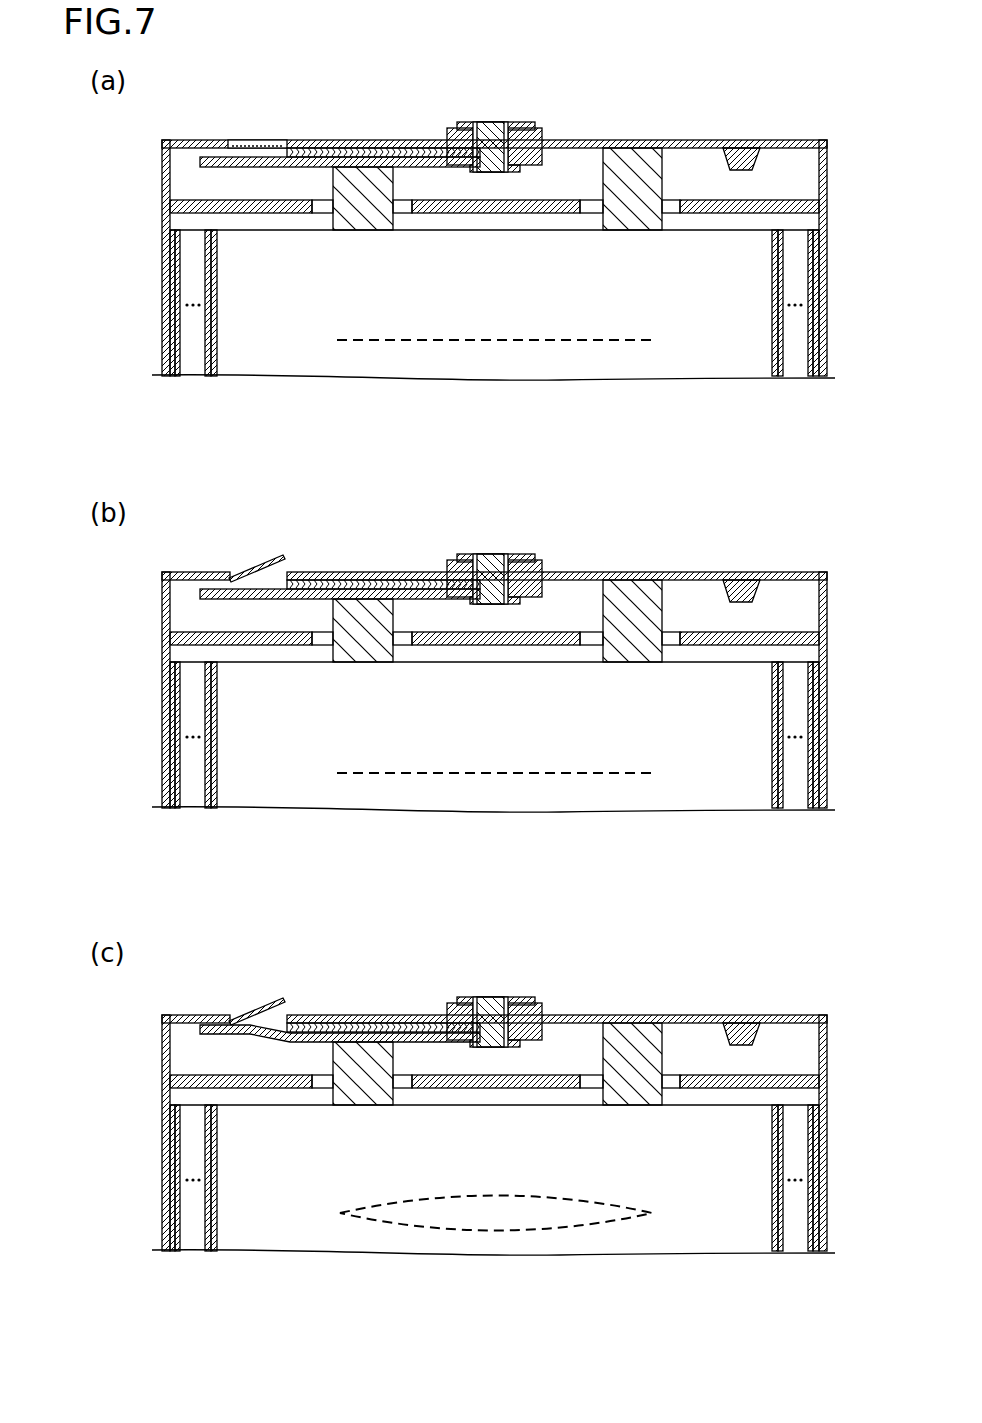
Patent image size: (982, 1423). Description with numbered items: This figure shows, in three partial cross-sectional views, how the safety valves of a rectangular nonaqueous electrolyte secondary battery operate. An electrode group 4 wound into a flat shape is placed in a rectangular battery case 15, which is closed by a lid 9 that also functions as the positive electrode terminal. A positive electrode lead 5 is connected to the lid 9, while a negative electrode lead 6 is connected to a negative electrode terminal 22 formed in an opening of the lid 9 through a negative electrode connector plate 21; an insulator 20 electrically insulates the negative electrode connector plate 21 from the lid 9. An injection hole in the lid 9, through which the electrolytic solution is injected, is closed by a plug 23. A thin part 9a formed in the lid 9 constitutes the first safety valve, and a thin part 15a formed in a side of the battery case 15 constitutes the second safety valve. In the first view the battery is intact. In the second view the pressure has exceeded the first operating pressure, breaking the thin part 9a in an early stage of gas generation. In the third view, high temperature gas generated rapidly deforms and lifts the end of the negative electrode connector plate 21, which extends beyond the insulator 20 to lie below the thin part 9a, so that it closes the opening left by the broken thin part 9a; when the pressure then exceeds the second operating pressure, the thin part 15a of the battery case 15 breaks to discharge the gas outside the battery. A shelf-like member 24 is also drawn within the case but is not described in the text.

The electrode assembly 4 is at (797, 265).
The insulating member 5 is at (630, 158).
The insulating member 6 is at (357, 175).
The sealing plate 9 is at (683, 145).
The vent flap 9a is at (265, 140).
The battery case 15 is at (162, 284).
The case bottom region 15a is at (568, 340).
The current collector plate 20 is at (428, 150).
The lead plate 21 is at (213, 157).
The terminal 22 is at (490, 128).
The sealing plug 23 is at (740, 152).
The spacer plate 24 is at (772, 202).